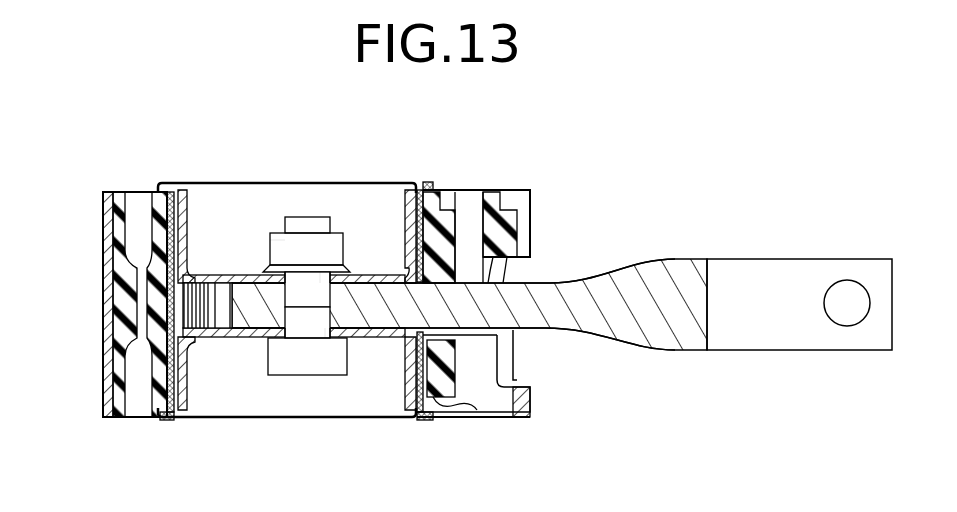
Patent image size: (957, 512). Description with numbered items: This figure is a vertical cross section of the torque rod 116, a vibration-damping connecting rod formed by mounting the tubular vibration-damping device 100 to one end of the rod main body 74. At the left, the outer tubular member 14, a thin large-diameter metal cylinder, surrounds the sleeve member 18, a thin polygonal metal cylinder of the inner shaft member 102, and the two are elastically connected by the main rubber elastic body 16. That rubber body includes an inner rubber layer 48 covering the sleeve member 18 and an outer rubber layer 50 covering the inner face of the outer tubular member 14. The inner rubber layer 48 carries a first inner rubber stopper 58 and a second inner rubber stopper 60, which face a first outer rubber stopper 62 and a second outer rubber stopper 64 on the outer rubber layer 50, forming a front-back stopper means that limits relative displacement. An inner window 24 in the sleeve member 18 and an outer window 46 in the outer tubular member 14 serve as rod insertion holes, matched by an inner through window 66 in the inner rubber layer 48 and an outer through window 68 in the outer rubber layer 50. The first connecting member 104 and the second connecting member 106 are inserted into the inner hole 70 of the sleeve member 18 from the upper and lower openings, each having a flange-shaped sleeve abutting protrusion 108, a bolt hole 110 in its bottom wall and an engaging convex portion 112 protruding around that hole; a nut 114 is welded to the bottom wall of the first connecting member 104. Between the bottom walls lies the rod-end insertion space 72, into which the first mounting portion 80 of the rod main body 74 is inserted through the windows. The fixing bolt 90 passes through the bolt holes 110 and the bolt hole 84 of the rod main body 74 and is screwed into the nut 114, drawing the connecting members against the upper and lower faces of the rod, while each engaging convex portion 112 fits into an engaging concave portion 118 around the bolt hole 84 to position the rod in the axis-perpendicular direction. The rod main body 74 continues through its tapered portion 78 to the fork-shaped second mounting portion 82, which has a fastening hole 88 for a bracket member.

The outer tubular member 14 is at (92, 223).
The main rubber elastic body 16 is at (462, 393).
The sleeve member 18 is at (173, 382).
The inner window 24 is at (427, 333).
The outer window 46 is at (522, 378).
The inner rubber layer 48 is at (422, 407).
The outer rubber layer 50 is at (517, 395).
The first inner rubber stopper 58 is at (160, 332).
The second inner rubber stopper 60 is at (440, 248).
The first outer rubber stopper 62 is at (125, 285).
The second outer rubber stopper 64 is at (493, 217).
The inner through window 66 is at (470, 292).
The outer through window 68 is at (497, 267).
The inner hole 70 is at (413, 387).
The rod-end insertion space 72 is at (203, 297).
The rod main body 74 is at (640, 358).
The tapered portion 78 is at (618, 267).
The first mounting portion 80 is at (242, 332).
The second mounting portion 82 is at (807, 257).
The bolt hole 84 is at (283, 312).
The fastening hole 88 is at (847, 318).
The fixing bolt 90 is at (302, 227).
The tubular vibration-damping device 100 is at (518, 167).
The inner shaft member 102 is at (187, 172).
The first connecting member 104 is at (402, 173).
The second connecting member 106 is at (207, 423).
The sleeve abutting protrusion 108 is at (162, 420).
The bolt hole 110 is at (320, 283).
The engaging convex portion 112 is at (332, 283).
The nut 114 is at (278, 250).
The torque rod 116 is at (693, 180).
The engaging concave portion 118 is at (293, 277).